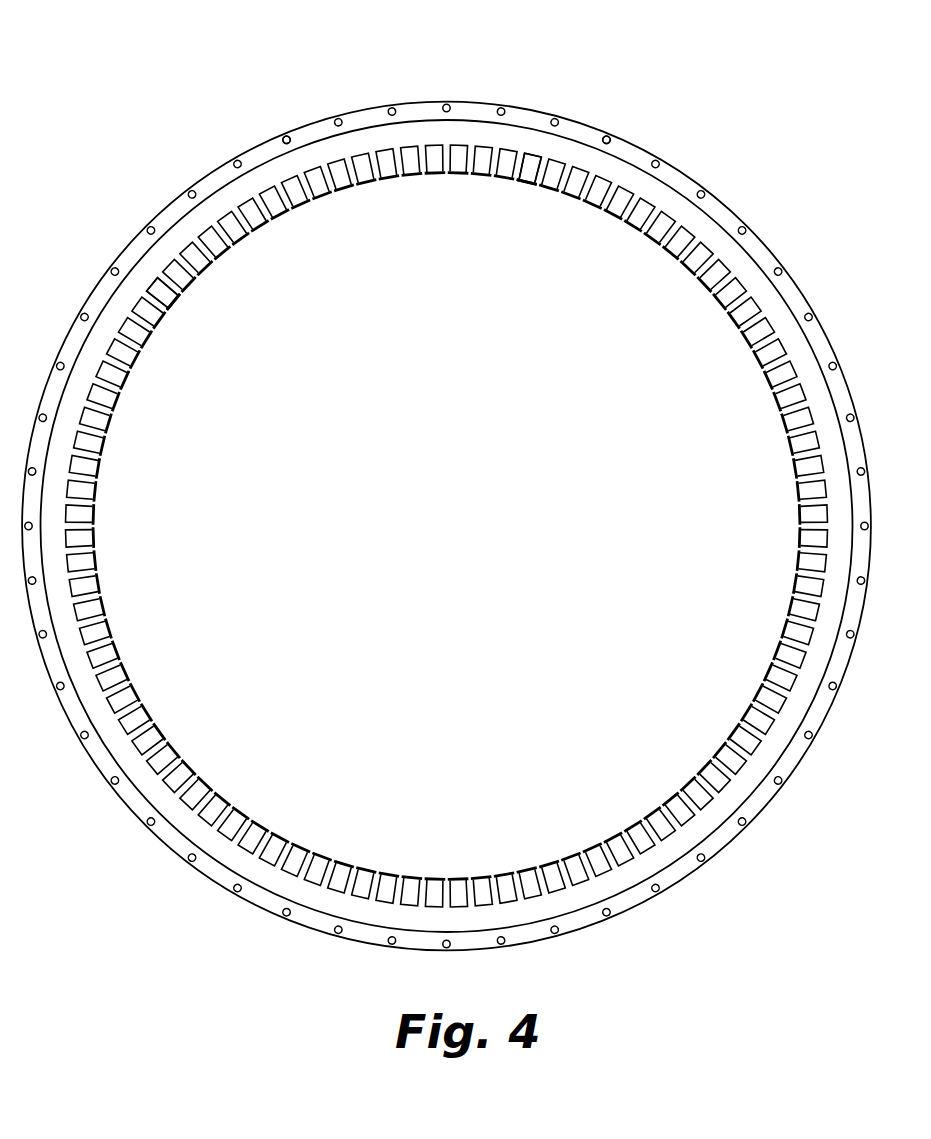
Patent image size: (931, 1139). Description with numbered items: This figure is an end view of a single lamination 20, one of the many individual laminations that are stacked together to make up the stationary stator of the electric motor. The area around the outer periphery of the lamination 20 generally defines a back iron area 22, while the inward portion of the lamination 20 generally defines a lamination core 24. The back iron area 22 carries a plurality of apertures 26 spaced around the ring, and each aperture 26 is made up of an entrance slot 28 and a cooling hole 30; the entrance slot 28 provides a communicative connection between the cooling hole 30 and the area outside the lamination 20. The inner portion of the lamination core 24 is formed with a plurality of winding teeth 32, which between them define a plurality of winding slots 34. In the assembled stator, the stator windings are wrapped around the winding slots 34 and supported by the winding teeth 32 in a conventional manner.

The lamination 20 is at (446, 501).
The back iron area 22 is at (446, 501).
The lamination core 24 is at (95, 352).
The aperture 26 is at (280, 120).
The entrance slot 28 is at (338, 116).
The cooling hole 30 is at (614, 142).
The winding tooth 32 is at (181, 296).
The winding slot 34 is at (529, 179).